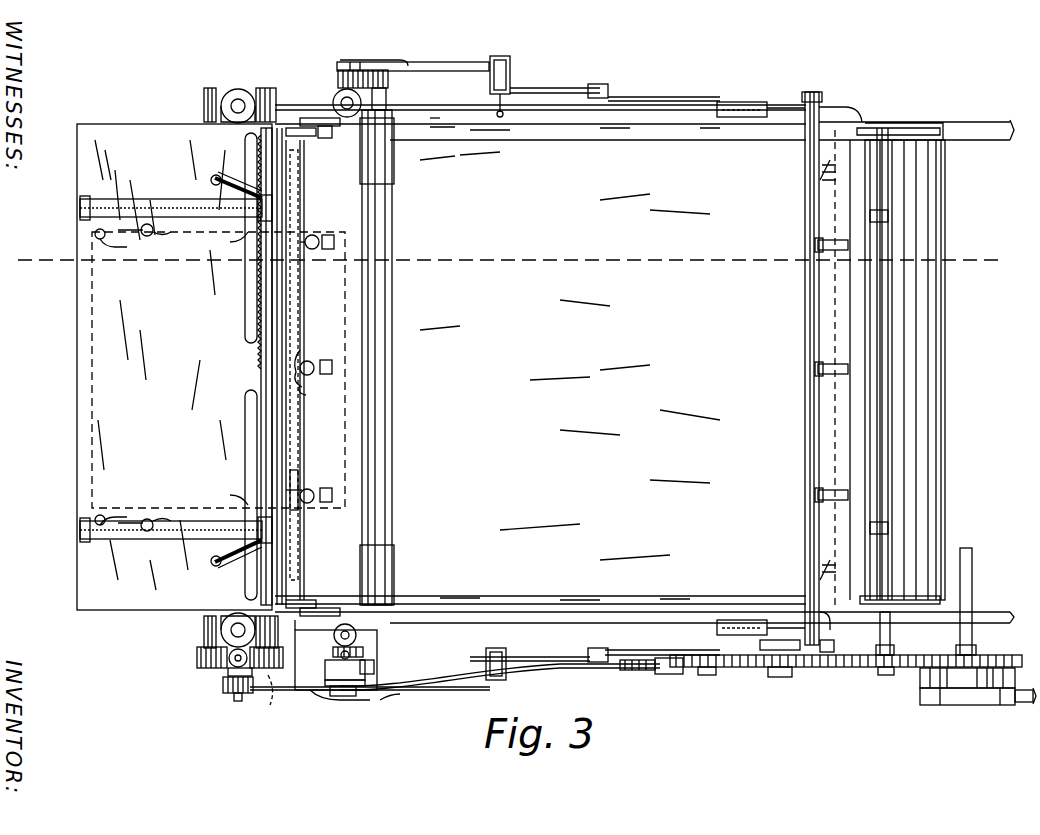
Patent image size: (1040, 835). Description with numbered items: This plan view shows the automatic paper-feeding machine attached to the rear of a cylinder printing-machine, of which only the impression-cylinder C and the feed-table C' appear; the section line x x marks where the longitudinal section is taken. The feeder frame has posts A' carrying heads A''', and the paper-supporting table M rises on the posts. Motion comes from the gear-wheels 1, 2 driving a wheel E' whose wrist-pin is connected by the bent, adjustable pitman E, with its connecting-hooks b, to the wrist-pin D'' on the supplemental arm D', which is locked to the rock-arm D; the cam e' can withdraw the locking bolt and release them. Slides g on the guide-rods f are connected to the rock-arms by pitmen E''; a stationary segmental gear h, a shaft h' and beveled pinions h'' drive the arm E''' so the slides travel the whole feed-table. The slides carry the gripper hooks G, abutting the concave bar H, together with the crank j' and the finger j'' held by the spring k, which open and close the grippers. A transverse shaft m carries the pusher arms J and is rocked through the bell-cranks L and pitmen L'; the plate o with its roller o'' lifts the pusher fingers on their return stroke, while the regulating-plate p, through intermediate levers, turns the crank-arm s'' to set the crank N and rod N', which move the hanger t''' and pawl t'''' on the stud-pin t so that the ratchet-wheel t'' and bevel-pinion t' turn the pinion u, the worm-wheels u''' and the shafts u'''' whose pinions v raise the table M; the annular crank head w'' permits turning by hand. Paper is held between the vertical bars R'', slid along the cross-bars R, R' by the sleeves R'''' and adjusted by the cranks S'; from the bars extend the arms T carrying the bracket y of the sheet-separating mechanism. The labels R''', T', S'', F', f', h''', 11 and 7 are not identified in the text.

The section line x x is at (500, 261).
The paper-supporting table M is at (211, 367).
The cross-bar R is at (247, 366).
The cross-bar R' is at (251, 366).
The vertical bar R'' is at (229, 494).
The guide R''' is at (229, 239).
The sleeve R'''' is at (223, 188).
The horizontal arm T is at (176, 198).
The tube T' is at (176, 542).
The crank S' is at (233, 566).
The handle S'' is at (223, 172).
The link 11 is at (111, 377).
The annular head w'' is at (138, 377).
The spring 7 is at (165, 376).
The longitudinally-movable bracket y is at (207, 299).
The regulating-plate p is at (290, 366).
The pusher arm J is at (317, 356).
The metallic plate o is at (308, 374).
The transverse shaft m is at (300, 478).
The post A' is at (241, 356).
The pinion v is at (204, 108).
The frame rail F' is at (644, 364).
The feed-table C' is at (540, 357).
The bell-crank L is at (309, 367).
The pitman L' is at (328, 367).
The roller o'' is at (317, 571).
The segmental beveled gear h is at (347, 93).
The shaft h' is at (391, 98).
The rock-arm D is at (423, 65).
The beveled pinion h'' is at (479, 96).
The pin f' is at (434, 103).
The arm E''' is at (615, 372).
The pitman E'' is at (595, 370).
The slide g is at (742, 102).
The concave bar H is at (803, 378).
The gripper hook G is at (831, 357).
The guide-rod f is at (683, 399).
The impression-cylinder C is at (914, 355).
The gear-wheel 1 is at (858, 668).
The gear-wheel 2 is at (1000, 666).
The crank j' is at (824, 632).
The finger j'' is at (780, 668).
The wheel E' is at (724, 683).
The pitman E is at (500, 682).
The connecting-hook b is at (668, 674).
The supplemental arm D' is at (336, 655).
The wrist-pin D'' is at (378, 685).
The crank N is at (355, 710).
The rod N' is at (283, 695).
The crank-arm s'' is at (274, 679).
The cam e' is at (330, 648).
The head A''' is at (367, 658).
The spring k is at (368, 644).
The pivot h''' is at (414, 662).
The worm-wheel u''' is at (196, 657).
The pinion u is at (225, 668).
The bevel-pinion t' is at (220, 671).
The ratchet-wheel t'' is at (218, 689).
The hanger t''' is at (223, 707).
The stud-pin t is at (236, 713).
The pawl t'''' is at (257, 708).
The shaft u'''' is at (272, 728).